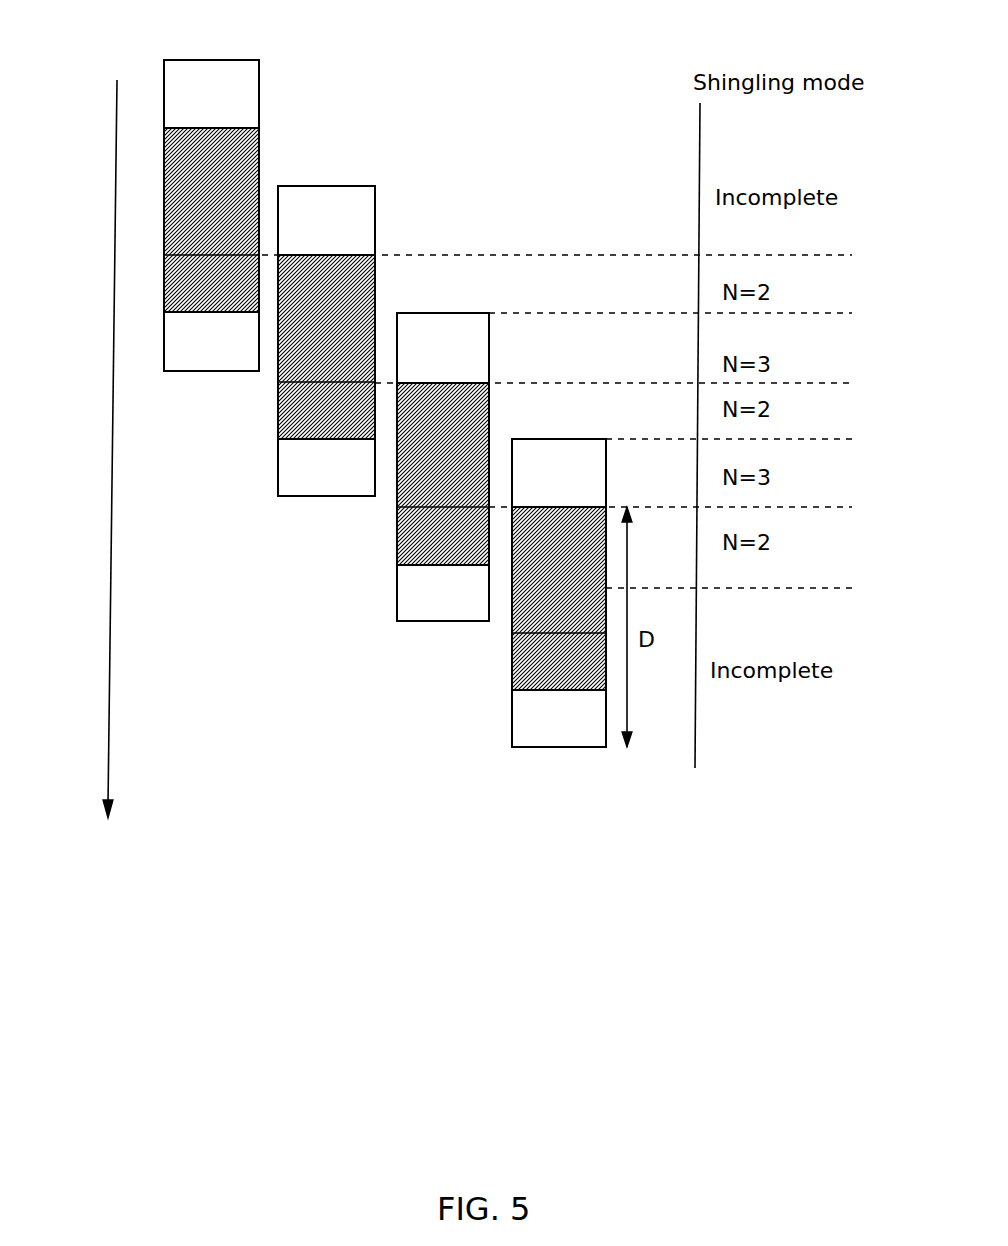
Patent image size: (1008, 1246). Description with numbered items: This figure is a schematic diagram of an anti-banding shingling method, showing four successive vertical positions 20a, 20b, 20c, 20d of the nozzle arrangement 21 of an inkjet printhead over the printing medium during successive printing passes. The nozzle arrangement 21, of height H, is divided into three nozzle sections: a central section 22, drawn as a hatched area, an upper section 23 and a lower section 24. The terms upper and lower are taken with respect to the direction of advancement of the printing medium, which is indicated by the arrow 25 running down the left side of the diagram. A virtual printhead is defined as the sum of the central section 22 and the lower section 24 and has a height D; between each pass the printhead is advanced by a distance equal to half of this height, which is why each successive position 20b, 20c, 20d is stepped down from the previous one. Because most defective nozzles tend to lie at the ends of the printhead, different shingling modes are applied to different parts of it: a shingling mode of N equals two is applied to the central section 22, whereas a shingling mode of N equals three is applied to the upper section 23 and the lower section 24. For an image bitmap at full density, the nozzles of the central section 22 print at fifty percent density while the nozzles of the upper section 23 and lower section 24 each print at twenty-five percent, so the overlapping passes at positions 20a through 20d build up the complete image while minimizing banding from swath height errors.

The first vertical position 20a is at (246, 229).
The second vertical position 20b is at (326, 324).
The third vertical position 20c is at (443, 445).
The fourth vertical position 20d is at (559, 578).
The nozzle arrangement 21 is at (163, 79).
The central section 22 is at (259, 157).
The upper section 23 is at (259, 82).
The lower section 24 is at (164, 348).
The arrow 25 is at (115, 300).